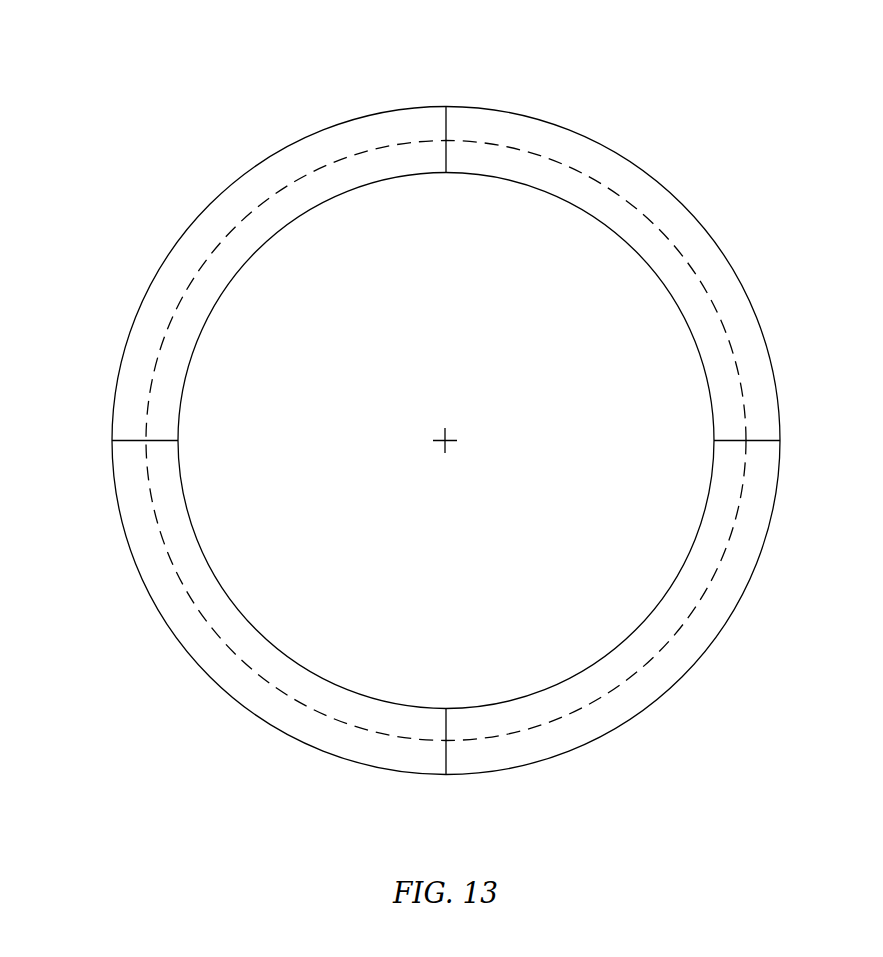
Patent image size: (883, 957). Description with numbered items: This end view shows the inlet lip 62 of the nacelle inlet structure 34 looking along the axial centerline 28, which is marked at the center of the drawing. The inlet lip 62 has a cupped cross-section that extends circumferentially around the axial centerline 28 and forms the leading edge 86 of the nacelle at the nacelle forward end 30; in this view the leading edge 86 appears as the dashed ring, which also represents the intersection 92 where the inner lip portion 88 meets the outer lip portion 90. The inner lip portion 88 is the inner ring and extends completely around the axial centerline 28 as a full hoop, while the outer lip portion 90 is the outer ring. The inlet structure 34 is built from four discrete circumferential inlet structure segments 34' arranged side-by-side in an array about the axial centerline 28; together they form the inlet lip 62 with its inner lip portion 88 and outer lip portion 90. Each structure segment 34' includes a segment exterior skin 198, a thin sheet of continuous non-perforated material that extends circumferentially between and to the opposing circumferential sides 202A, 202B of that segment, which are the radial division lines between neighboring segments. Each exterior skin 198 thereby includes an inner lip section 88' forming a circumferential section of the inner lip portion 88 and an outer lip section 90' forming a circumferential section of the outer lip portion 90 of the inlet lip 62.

The inlet structure 34 is at (447, 432).
The inlet lip 62 is at (685, 108).
The inlet structure segment 34' is at (447, 432).
The outer lip portion 90 is at (447, 432).
The outer lip section 90' is at (447, 432).
The inner lip portion 88 is at (446, 441).
The inner lip section 88' is at (446, 441).
The segment exterior skin 198 is at (126, 357).
The first circumferential side 202A is at (447, 113).
The second circumferential side 202B is at (447, 101).
The nacelle forward end 30 is at (446, 441).
The leading edge 86 is at (446, 441).
The intersection 92 is at (594, 175).
The axial centerline 28 is at (447, 452).